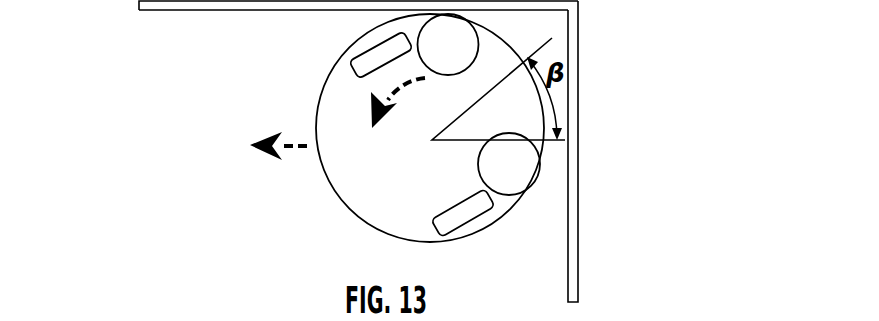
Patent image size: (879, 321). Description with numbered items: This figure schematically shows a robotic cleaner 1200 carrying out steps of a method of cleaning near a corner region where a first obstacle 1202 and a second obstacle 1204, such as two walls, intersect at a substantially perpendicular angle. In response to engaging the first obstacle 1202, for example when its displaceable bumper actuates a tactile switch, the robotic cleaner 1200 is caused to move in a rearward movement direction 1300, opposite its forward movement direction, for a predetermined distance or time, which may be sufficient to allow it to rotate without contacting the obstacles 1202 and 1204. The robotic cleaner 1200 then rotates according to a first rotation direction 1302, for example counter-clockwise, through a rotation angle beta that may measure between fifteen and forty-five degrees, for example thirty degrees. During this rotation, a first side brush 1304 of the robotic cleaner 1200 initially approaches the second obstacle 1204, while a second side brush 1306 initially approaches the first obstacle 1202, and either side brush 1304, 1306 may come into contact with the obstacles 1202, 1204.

The robotic cleaner 1200 is at (272, 69).
The first obstacle 1202 is at (573, 169).
The second obstacle 1204 is at (157, 11).
The rearward movement direction 1300 is at (270, 155).
The first rotation direction 1302 is at (373, 118).
The first side brush 1304 is at (465, 38).
The second side brush 1306 is at (513, 182).